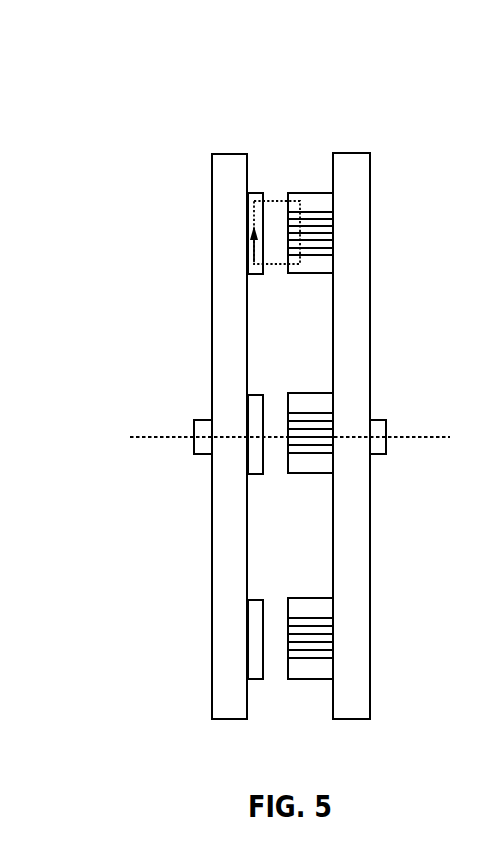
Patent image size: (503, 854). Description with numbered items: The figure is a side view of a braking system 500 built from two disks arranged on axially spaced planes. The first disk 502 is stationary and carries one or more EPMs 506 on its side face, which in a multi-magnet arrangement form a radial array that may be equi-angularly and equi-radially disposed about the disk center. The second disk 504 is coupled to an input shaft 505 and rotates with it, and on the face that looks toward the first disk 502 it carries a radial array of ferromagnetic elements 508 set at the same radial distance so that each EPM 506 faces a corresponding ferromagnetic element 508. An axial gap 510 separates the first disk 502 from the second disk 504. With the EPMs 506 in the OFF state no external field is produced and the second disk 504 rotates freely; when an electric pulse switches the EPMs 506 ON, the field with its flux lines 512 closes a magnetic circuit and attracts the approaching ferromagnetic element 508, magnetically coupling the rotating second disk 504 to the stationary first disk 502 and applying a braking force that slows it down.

The braking system 500 is at (264, 409).
The first disk 502 is at (355, 152).
The second disk 504 is at (230, 153).
The input shaft 505 is at (200, 419).
The EPM 506 is at (309, 275).
The ferromagnetic element 508 is at (258, 192).
The axial gap 510 is at (276, 692).
The flux lines 512 is at (280, 201).